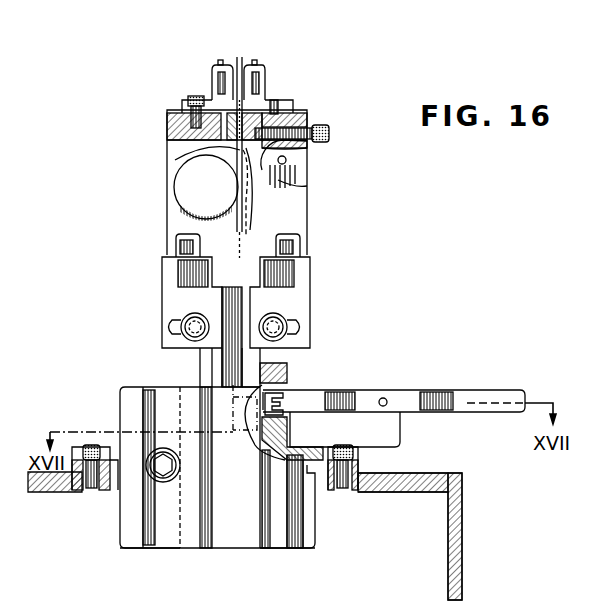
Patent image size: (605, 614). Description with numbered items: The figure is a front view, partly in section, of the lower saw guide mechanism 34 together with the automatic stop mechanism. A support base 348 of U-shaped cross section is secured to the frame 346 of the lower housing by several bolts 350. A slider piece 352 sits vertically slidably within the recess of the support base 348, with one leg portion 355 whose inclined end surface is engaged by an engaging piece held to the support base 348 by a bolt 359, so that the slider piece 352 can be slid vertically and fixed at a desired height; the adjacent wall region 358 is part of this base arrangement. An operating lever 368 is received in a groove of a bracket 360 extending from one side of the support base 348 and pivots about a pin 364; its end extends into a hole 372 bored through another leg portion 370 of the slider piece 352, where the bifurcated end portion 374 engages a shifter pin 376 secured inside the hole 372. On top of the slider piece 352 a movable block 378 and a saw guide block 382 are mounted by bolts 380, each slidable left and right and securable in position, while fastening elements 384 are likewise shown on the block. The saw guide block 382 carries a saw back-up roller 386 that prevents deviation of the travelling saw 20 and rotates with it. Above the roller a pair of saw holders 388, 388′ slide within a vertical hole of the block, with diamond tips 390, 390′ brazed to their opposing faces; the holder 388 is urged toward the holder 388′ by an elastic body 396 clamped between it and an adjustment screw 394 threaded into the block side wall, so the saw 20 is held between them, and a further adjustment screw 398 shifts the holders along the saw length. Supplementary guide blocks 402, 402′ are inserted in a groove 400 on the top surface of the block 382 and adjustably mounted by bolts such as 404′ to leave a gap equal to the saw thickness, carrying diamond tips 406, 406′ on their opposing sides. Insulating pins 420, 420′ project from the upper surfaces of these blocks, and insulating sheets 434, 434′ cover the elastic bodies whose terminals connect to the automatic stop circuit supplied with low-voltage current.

The lower saw guide mechanism 34 is at (388, 238).
The travelling saw 20 is at (240, 235).
The frame 346 is at (455, 474).
The support base 348 is at (303, 512).
The bolts 350 is at (90, 446).
The slider piece 352 is at (265, 538).
The leg portion 355 is at (200, 548).
The wall 358 is at (165, 548).
The bolt 359 is at (148, 472).
The bracket 360 is at (397, 442).
The pin 364 is at (383, 397).
The operating lever 368 is at (455, 392).
The leg portion 370 is at (300, 548).
The hole 372 is at (263, 388).
The bifurcated end portion 374 is at (287, 370).
The shifter pin 376 is at (283, 424).
The movable block 378 is at (312, 301).
The bolts 380 is at (165, 305).
The saw guide block 382 is at (308, 228).
The bolt 384 is at (175, 245).
The saw back-up roller 386 is at (168, 196).
The saw holder 388 is at (262, 158).
The saw holder 388′ is at (215, 150).
The diamond tip 390 is at (246, 225).
The diamond tip 390′ is at (206, 188).
The adjustment screw 394 is at (307, 140).
The elastic body 396 is at (278, 106).
The adjustment screw 398 is at (306, 178).
The groove 400 is at (326, 135).
The supplementary guide block 402 is at (296, 104).
The supplementary guide block 402′ is at (182, 104).
The bolt 404′ is at (192, 100).
The diamond tip 406 is at (248, 78).
The diamond tip 406′ is at (231, 78).
The pin 420 is at (255, 72).
The pin 420′ is at (214, 82).
The insulating sheet 434 is at (262, 85).
The insulating sheet 434′ is at (214, 90).